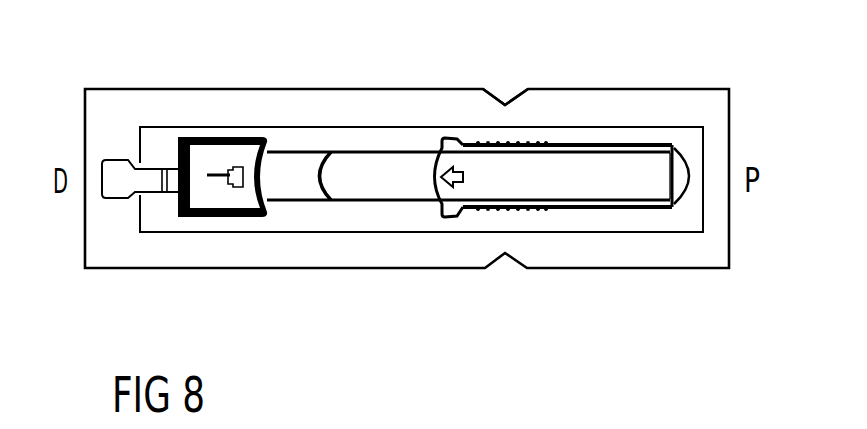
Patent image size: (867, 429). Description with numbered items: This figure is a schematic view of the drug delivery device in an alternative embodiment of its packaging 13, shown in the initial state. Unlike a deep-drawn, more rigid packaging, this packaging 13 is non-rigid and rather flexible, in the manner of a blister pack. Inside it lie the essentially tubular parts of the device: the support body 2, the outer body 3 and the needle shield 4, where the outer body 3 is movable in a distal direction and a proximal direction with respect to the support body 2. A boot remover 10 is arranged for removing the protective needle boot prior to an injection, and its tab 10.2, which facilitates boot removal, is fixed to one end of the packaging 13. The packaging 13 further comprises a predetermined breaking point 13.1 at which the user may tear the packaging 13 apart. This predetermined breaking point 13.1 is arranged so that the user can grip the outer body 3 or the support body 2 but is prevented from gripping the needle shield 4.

The support body 2 is at (378, 185).
The outer body 3 is at (585, 182).
The needle shield 4 is at (223, 148).
The boot remover 10 is at (109, 116).
The tab 10.2 is at (118, 173).
The packaging 13 is at (338, 112).
The predetermined breaking point 13.1 is at (505, 104).